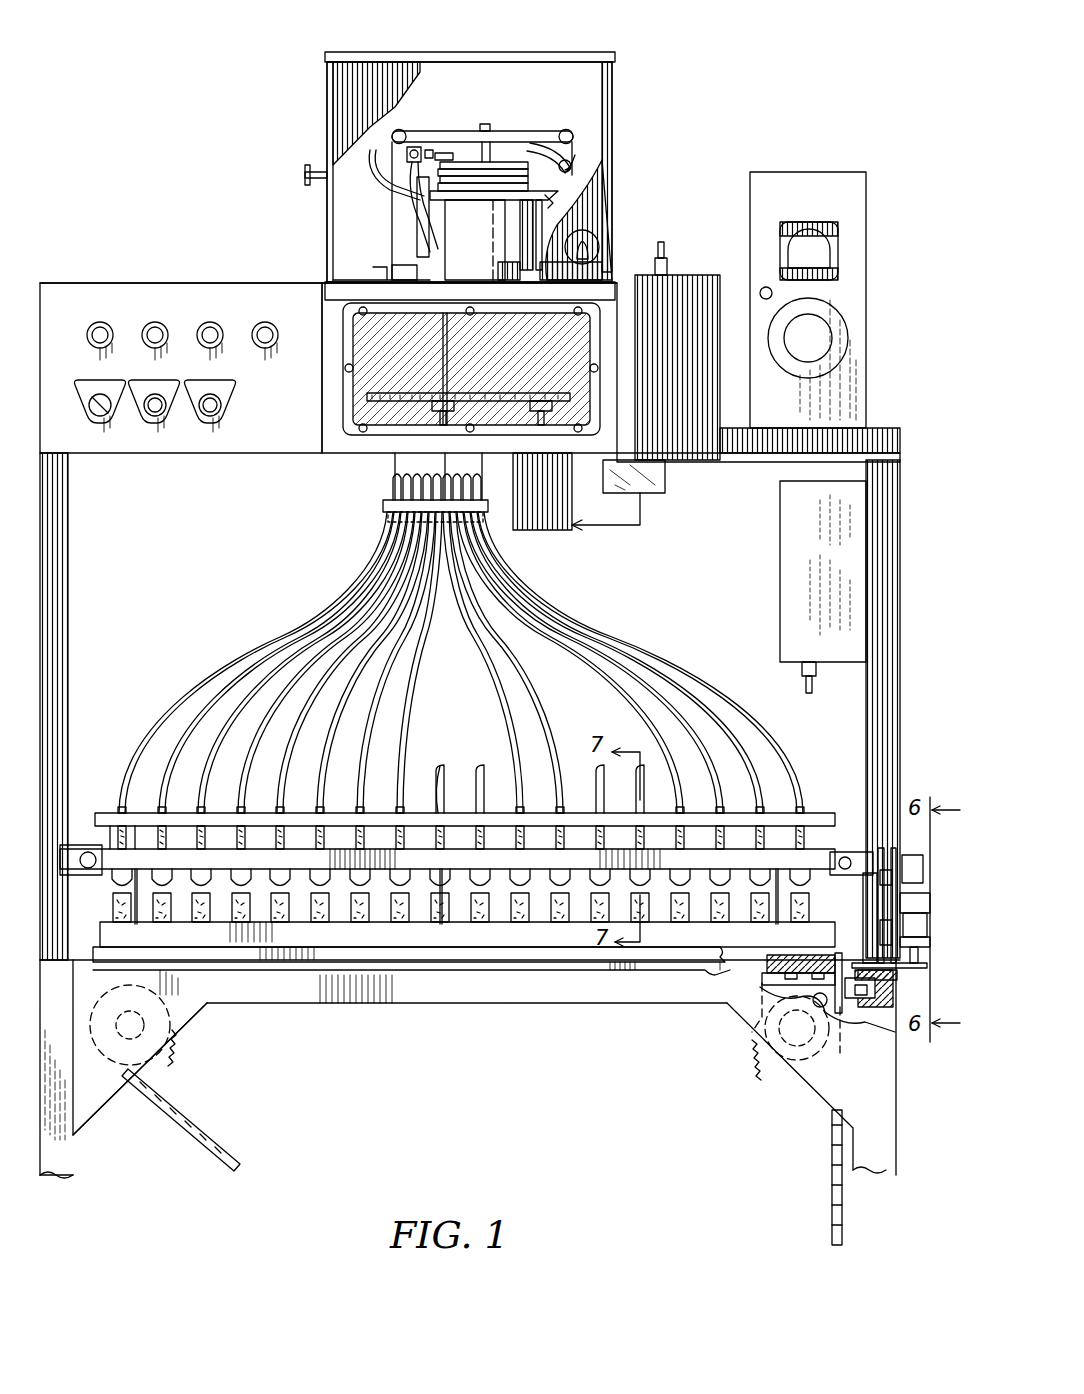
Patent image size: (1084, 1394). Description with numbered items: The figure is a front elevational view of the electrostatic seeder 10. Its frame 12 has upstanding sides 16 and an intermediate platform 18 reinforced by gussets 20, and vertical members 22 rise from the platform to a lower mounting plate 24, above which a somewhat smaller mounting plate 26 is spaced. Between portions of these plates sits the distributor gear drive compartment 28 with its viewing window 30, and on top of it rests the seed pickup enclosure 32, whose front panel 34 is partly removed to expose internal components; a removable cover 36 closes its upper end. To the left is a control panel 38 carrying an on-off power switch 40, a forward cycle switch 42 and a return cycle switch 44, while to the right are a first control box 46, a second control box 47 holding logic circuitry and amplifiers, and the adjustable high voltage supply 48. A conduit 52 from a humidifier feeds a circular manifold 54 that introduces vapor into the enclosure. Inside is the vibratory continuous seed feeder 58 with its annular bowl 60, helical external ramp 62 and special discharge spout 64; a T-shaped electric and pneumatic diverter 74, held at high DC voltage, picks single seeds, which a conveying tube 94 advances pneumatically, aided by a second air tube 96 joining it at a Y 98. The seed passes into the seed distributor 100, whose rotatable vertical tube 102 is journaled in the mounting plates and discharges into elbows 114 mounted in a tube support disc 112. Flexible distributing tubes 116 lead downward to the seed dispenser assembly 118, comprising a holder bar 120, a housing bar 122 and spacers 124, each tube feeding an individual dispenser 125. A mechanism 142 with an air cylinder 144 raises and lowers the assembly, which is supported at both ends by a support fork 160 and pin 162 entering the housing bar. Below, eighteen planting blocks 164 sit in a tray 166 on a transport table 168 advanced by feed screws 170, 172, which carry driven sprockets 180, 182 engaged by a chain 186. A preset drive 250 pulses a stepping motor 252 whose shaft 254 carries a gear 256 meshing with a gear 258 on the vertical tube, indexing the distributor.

The electrostatic seeder 10 is at (200, 235).
The frame 12 is at (65, 1195).
The upstanding sides 16 is at (73, 1177).
The intermediate platform 18 is at (470, 1000).
The gussets 20 is at (108, 1100).
The vertical members 22 is at (70, 585).
The lower mounting plate 24 is at (170, 453).
The mounting plate 26 is at (215, 283).
The distributor gear drive compartment 28 is at (318, 392).
The viewing window 30 is at (355, 343).
The seed pickup enclosure 32 is at (610, 118).
The front panel 34 is at (345, 122).
The removable cover 36 is at (487, 55).
The control panel 38 is at (108, 297).
The on-off power switch 40 is at (90, 380).
The forward cycle switch 42 is at (160, 375).
The return cycle switch 44 is at (228, 404).
The first control box 46 is at (678, 275).
The second control box 47 is at (780, 510).
The adjustable high voltage supply 48 is at (782, 172).
The conduit 52 is at (589, 165).
The circular manifold 54 is at (508, 130).
The continuous seed feeder 58 is at (486, 250).
The annular hopper or bowl 60 is at (553, 202).
The helical external ramp 62 is at (482, 193).
The discharge spout 64 is at (450, 152).
The diverter 74 is at (413, 147).
The conveying tube 94 is at (415, 226).
The second air tube 96 is at (373, 183).
The Y 98 is at (470, 281).
The seed distributor 100 is at (380, 515).
The rotatable vertical tube 102 is at (445, 353).
The tube support plate or disc 112 is at (382, 505).
The elbows 114 is at (385, 480).
The flexible distributing tubes 116 is at (297, 666).
The seed dispenser assembly 118 is at (805, 813).
The holder bar 120 is at (425, 813).
The housing bar 122 is at (790, 875).
The spacers 124 is at (180, 830).
The dispenser 125 is at (160, 890).
The mechanism 142 is at (915, 894).
The air cylinder 144 is at (915, 926).
The support fork 160 is at (81, 849).
The pin 162 is at (838, 845).
The planting blocks 164 is at (361, 909).
The tray 166 is at (533, 947).
The transport table 168 is at (383, 962).
The feed screw 170 is at (760, 1080).
The feed screw 172 is at (130, 1025).
The driven sprocket 180 is at (758, 1038).
The driven sprocket 182 is at (162, 1058).
The chain 186 is at (217, 1133).
The preset drive 250 is at (654, 493).
The stepping motor 252 is at (526, 530).
The shaft 254 is at (528, 416).
The gear 256 is at (552, 397).
The gear 258 is at (395, 390).